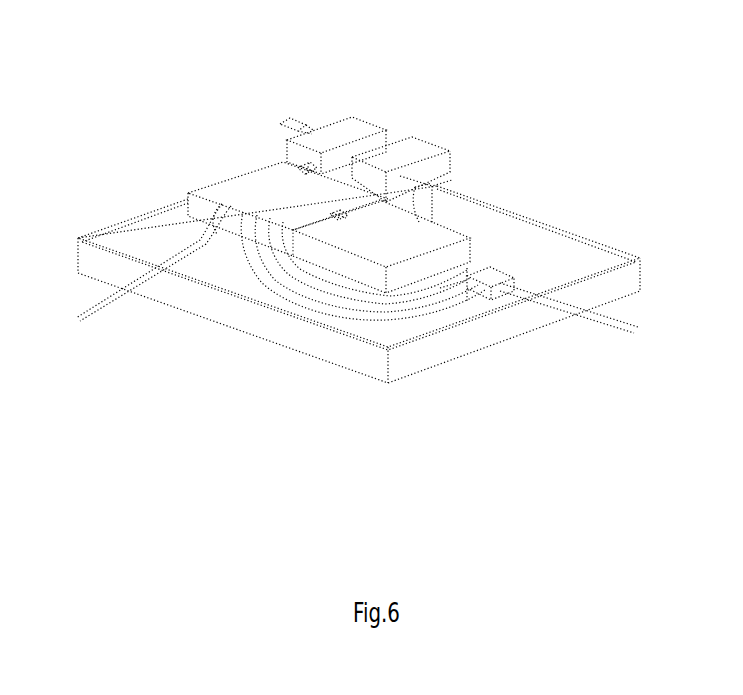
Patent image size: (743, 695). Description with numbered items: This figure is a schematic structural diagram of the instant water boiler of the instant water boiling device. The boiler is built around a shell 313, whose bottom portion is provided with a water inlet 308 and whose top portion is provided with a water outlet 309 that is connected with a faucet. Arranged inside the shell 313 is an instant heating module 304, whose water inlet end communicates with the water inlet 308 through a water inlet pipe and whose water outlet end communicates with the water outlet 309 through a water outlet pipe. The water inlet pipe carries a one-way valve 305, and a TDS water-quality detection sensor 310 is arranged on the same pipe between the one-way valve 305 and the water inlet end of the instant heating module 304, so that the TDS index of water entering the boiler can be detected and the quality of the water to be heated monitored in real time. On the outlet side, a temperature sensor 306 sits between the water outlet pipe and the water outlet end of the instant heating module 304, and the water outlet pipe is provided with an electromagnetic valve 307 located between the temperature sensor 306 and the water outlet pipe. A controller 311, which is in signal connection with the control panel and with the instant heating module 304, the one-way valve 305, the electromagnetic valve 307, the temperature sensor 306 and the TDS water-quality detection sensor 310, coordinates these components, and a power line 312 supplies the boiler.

The instant heating module 304 is at (433, 218).
The one-way valve 305 is at (353, 120).
The temperature sensor 306 is at (502, 270).
The electromagnetic valve 307 is at (495, 283).
The water inlet 308 is at (290, 120).
The water outlet 309 is at (440, 295).
The TDS water-quality detection sensor 310 is at (420, 150).
The controller 311 is at (253, 190).
The power line 312 is at (76, 318).
The shell 313 is at (337, 353).